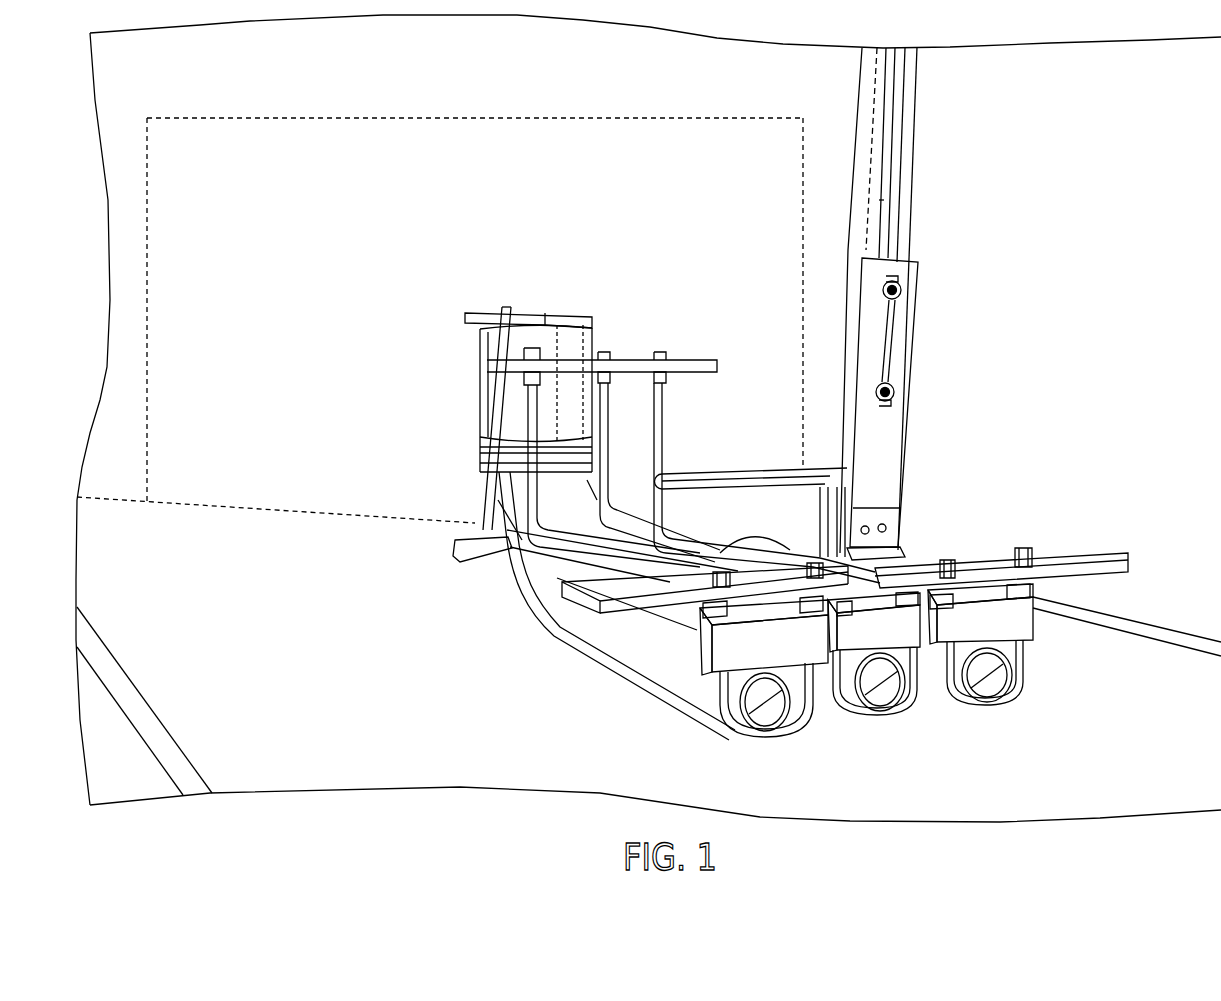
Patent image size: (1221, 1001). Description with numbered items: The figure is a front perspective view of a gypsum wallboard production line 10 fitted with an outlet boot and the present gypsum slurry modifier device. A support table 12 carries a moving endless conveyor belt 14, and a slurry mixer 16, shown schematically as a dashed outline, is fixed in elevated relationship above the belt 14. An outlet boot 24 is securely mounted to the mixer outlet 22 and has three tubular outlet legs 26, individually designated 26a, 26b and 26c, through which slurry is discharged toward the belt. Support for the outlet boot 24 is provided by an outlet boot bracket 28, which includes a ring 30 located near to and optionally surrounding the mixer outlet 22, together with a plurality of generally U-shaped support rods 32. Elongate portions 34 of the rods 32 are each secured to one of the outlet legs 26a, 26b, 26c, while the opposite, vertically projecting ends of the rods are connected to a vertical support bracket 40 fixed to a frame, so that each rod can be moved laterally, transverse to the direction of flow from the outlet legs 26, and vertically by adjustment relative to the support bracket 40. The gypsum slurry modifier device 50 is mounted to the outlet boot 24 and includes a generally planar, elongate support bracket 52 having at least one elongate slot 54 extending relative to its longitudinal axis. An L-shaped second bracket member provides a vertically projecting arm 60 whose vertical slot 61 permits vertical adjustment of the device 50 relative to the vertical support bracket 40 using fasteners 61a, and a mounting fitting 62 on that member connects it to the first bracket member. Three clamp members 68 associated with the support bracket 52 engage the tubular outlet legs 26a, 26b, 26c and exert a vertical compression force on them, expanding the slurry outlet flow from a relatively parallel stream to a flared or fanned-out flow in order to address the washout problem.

The gypsum wallboard production line 10 is at (1143, 318).
The support table 12 is at (173, 777).
The conveyor belt 14 is at (393, 775).
The slurry mixer 16 is at (275, 510).
The mixer outlet 22 is at (487, 380).
The outlet boot 24 is at (530, 580).
The outlet legs 26 is at (587, 640).
The first outlet leg 26a is at (687, 673).
The second outlet leg 26b is at (835, 677).
The third outlet leg 26c is at (938, 673).
The outlet boot bracket 28 is at (503, 550).
The ring 30 is at (480, 353).
The support rods 32 is at (593, 465).
The elongate portions 34 is at (600, 545).
The vertical support bracket 40 is at (858, 118).
The gypsum slurry modifier device 50 is at (1078, 542).
The support bracket 52 is at (1128, 570).
The elongate slot 54 is at (1103, 558).
The vertically projecting arm 60 is at (898, 435).
The vertical slot 61 is at (893, 345).
The fasteners 61a is at (905, 292).
The mounting fitting 62 is at (895, 520).
The clamp members 68 is at (1050, 628).